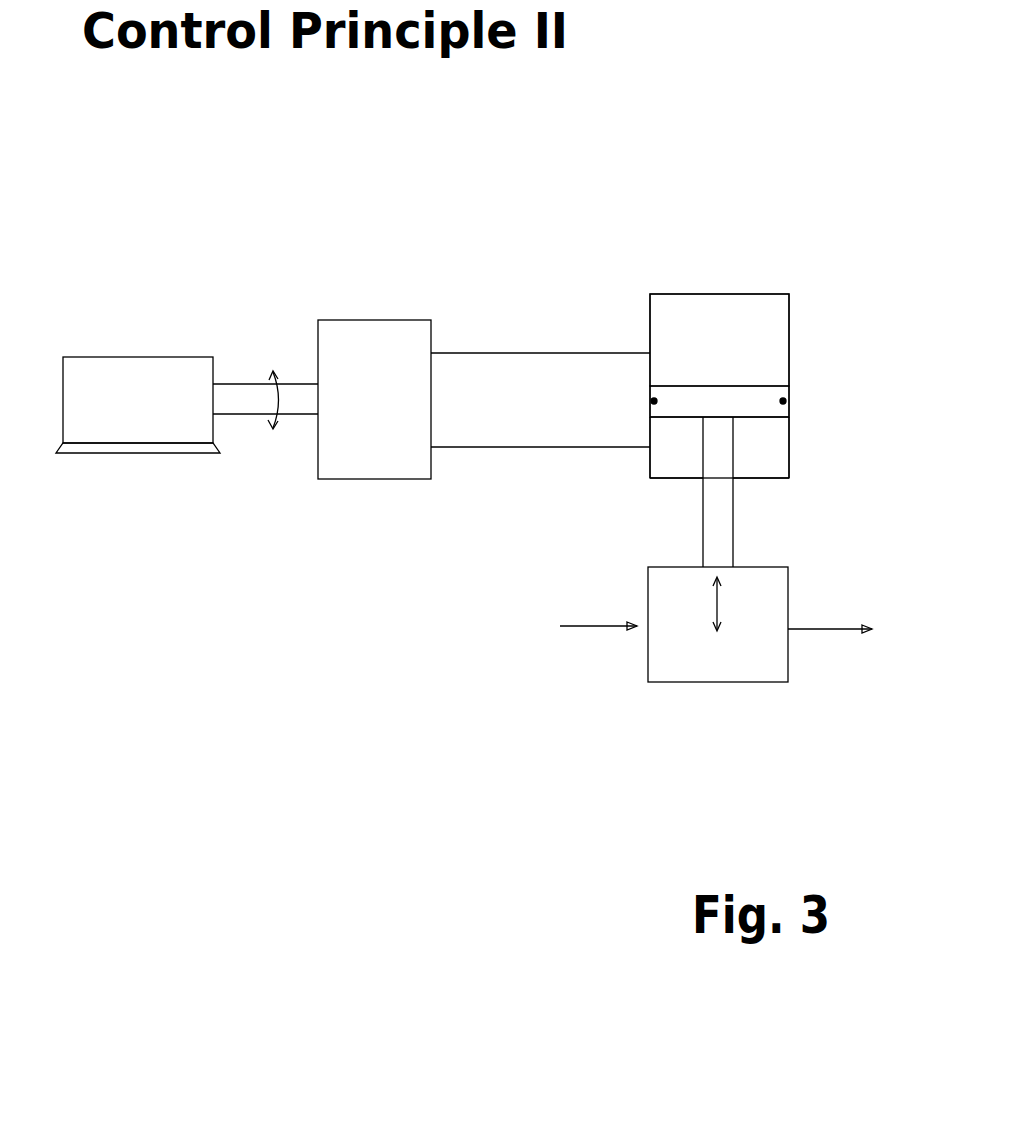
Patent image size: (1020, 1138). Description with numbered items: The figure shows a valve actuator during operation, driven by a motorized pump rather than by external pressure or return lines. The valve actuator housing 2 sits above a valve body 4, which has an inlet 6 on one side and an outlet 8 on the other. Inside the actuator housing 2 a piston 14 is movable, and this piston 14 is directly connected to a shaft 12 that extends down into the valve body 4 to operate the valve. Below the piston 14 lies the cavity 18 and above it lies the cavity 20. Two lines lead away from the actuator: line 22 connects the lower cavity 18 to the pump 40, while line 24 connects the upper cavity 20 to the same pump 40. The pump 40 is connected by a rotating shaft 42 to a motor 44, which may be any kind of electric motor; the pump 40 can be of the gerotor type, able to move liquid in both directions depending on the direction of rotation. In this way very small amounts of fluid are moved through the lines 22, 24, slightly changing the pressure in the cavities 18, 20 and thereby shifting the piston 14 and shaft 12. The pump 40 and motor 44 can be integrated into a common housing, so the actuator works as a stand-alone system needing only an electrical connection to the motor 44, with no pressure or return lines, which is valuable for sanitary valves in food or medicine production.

The valve actuator housing 2 is at (795, 367).
The valve body 4 is at (810, 587).
The inlet 6 is at (600, 626).
The outlet 8 is at (810, 629).
The shaft 12 is at (719, 468).
The piston 14 is at (748, 400).
The cavity 18 is at (667, 445).
The cavity 20 is at (723, 302).
The line 22 is at (570, 447).
The line 24 is at (583, 353).
The pump 40 is at (375, 333).
The rotating shaft 42 is at (287, 467).
The motor 44 is at (113, 368).